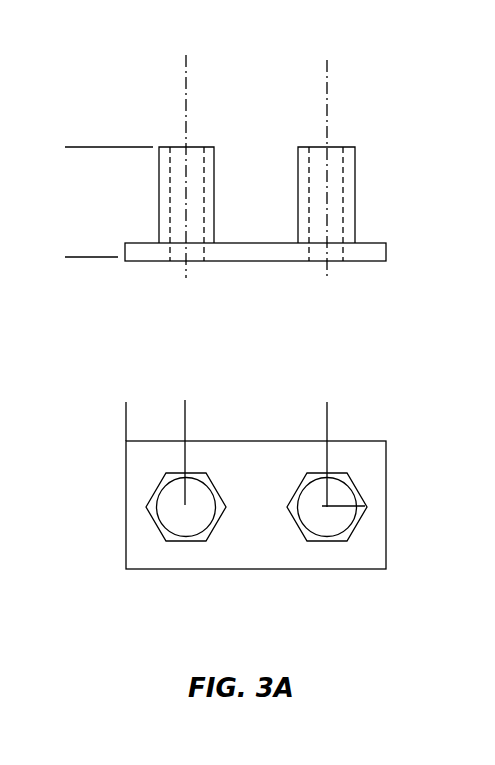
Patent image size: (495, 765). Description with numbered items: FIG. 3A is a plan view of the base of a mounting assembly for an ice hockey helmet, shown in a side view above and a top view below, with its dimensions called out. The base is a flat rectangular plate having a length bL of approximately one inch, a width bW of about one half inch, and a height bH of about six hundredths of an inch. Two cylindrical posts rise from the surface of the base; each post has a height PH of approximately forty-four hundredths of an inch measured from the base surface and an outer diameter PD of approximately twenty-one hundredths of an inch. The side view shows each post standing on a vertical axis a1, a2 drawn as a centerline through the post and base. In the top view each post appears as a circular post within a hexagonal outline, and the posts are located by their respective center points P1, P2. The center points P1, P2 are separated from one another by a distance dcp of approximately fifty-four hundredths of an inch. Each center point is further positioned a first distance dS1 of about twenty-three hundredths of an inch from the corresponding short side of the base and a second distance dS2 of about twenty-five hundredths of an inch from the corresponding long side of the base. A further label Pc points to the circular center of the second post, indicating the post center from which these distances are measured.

The axis of first pin a1 is at (189, 152).
The axis of second pin a2 is at (335, 155).
The outer diameter PD is at (214, 138).
The height PH is at (75, 147).
The length bL is at (386, 291).
The height bH is at (418, 208).
The width bW is at (126, 441).
The first distance dS1 is at (185, 413).
The distance dcp is at (327, 413).
The second distance dS2 is at (393, 506).
The pin center hole Pc is at (343, 487).
The center point P1 is at (183, 508).
The center point P2 is at (327, 507).